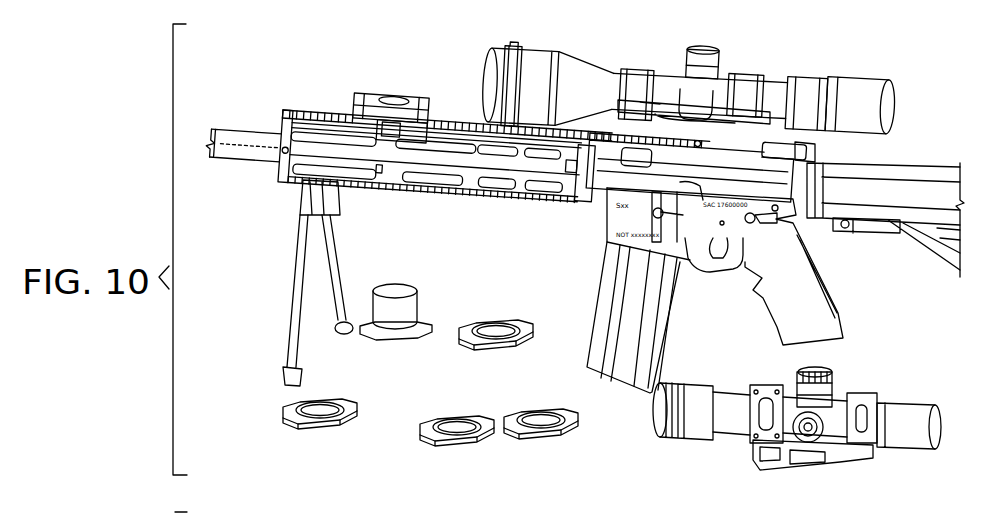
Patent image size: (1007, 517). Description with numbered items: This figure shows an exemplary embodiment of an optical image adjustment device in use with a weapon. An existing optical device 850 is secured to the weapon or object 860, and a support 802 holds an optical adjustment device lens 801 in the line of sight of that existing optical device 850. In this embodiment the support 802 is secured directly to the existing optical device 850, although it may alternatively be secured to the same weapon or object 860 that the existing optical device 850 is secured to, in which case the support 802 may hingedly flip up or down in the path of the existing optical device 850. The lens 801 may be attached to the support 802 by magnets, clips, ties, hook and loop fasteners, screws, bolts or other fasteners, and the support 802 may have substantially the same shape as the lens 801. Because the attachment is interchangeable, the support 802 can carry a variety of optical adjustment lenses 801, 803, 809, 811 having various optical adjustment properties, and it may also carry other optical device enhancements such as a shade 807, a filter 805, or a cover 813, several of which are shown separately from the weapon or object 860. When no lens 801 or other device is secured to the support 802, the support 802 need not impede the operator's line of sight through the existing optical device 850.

The optical adjustment device lens 801 is at (520, 44).
The support 802 is at (370, 97).
The optical adjustment lens 803 is at (297, 404).
The filter 805 is at (500, 330).
The shade 807 is at (377, 307).
The optical adjustment lens 809 is at (467, 418).
The optical adjustment lens 811 is at (540, 434).
The cover 813 is at (493, 75).
The existing optical device 850 is at (873, 88).
The weapon or object 860 is at (300, 172).